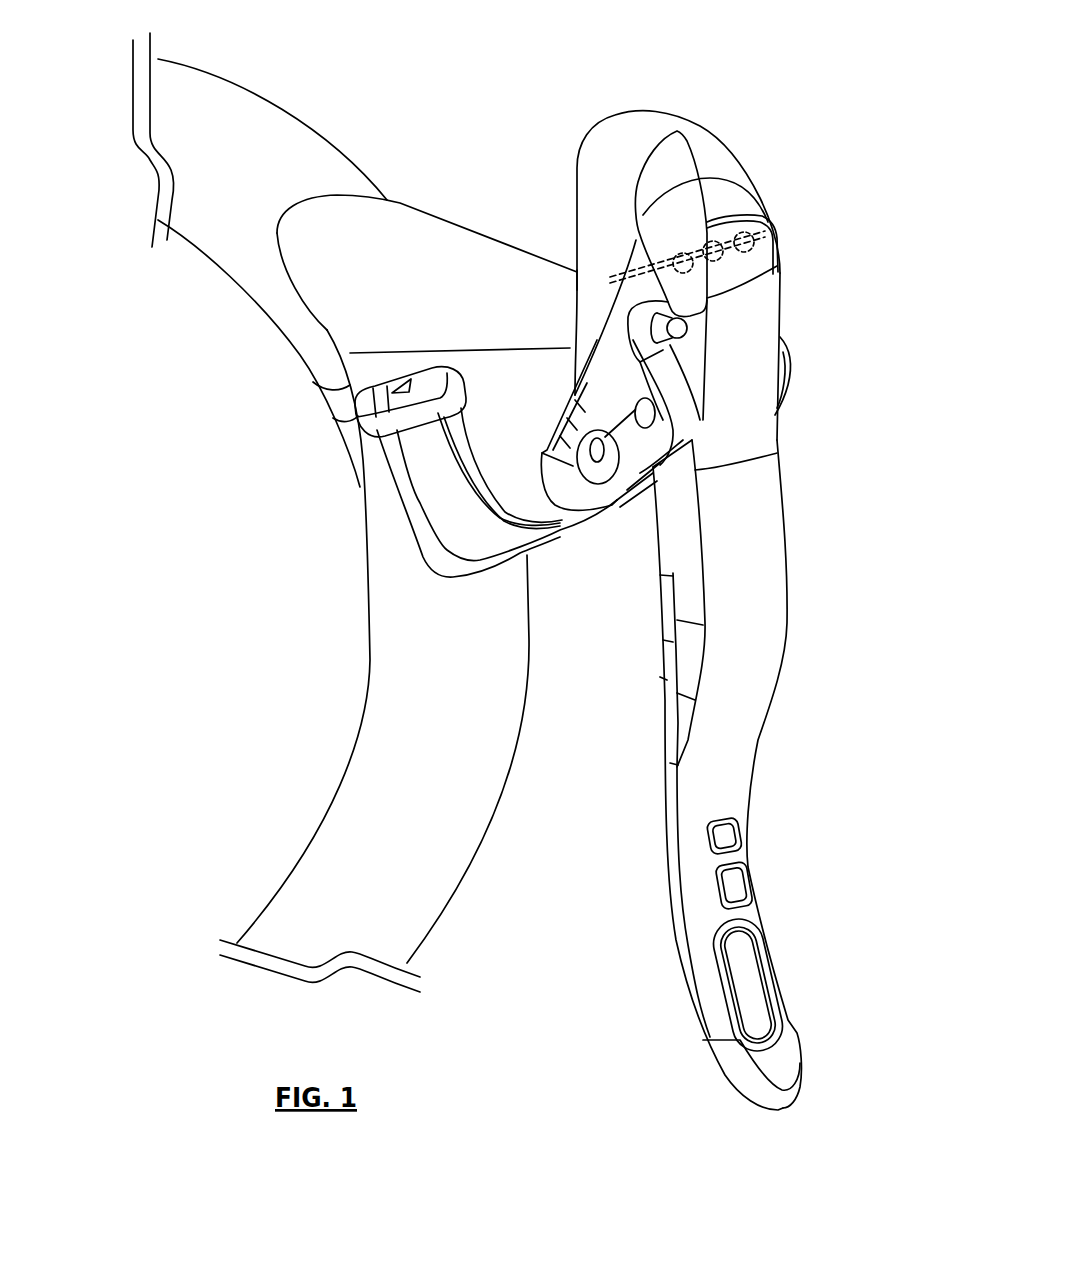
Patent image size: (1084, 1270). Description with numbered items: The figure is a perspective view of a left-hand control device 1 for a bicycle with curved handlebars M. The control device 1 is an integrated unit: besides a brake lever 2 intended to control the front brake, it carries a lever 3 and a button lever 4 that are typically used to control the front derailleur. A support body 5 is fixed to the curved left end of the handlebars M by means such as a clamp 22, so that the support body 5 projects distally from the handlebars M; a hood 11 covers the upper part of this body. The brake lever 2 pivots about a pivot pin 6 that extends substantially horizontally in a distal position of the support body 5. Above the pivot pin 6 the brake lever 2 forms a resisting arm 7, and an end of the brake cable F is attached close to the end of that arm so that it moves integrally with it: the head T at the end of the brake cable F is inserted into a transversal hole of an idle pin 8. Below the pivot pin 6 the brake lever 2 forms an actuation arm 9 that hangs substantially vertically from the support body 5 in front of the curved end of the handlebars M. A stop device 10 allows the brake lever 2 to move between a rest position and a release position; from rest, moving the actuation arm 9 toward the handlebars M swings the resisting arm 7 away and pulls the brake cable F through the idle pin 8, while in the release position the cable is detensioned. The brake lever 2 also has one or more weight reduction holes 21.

The control device 1 is at (555, 73).
The brake lever 2 is at (805, 838).
The lever 3 is at (635, 503).
The button lever 4 is at (377, 430).
The support body 5 is at (425, 185).
The pivot pin 6 is at (651, 421).
The resisting arm 7 is at (752, 328).
The idle pin 8 is at (754, 238).
The actuation arm 9 is at (705, 953).
The stop device 10 is at (680, 327).
The hood cover 11 is at (678, 98).
The weight reduction holes 21 is at (733, 840).
The clamp 22 is at (313, 382).
The handlebars M is at (427, 640).
The brake cable F is at (632, 267).
The head T is at (724, 246).